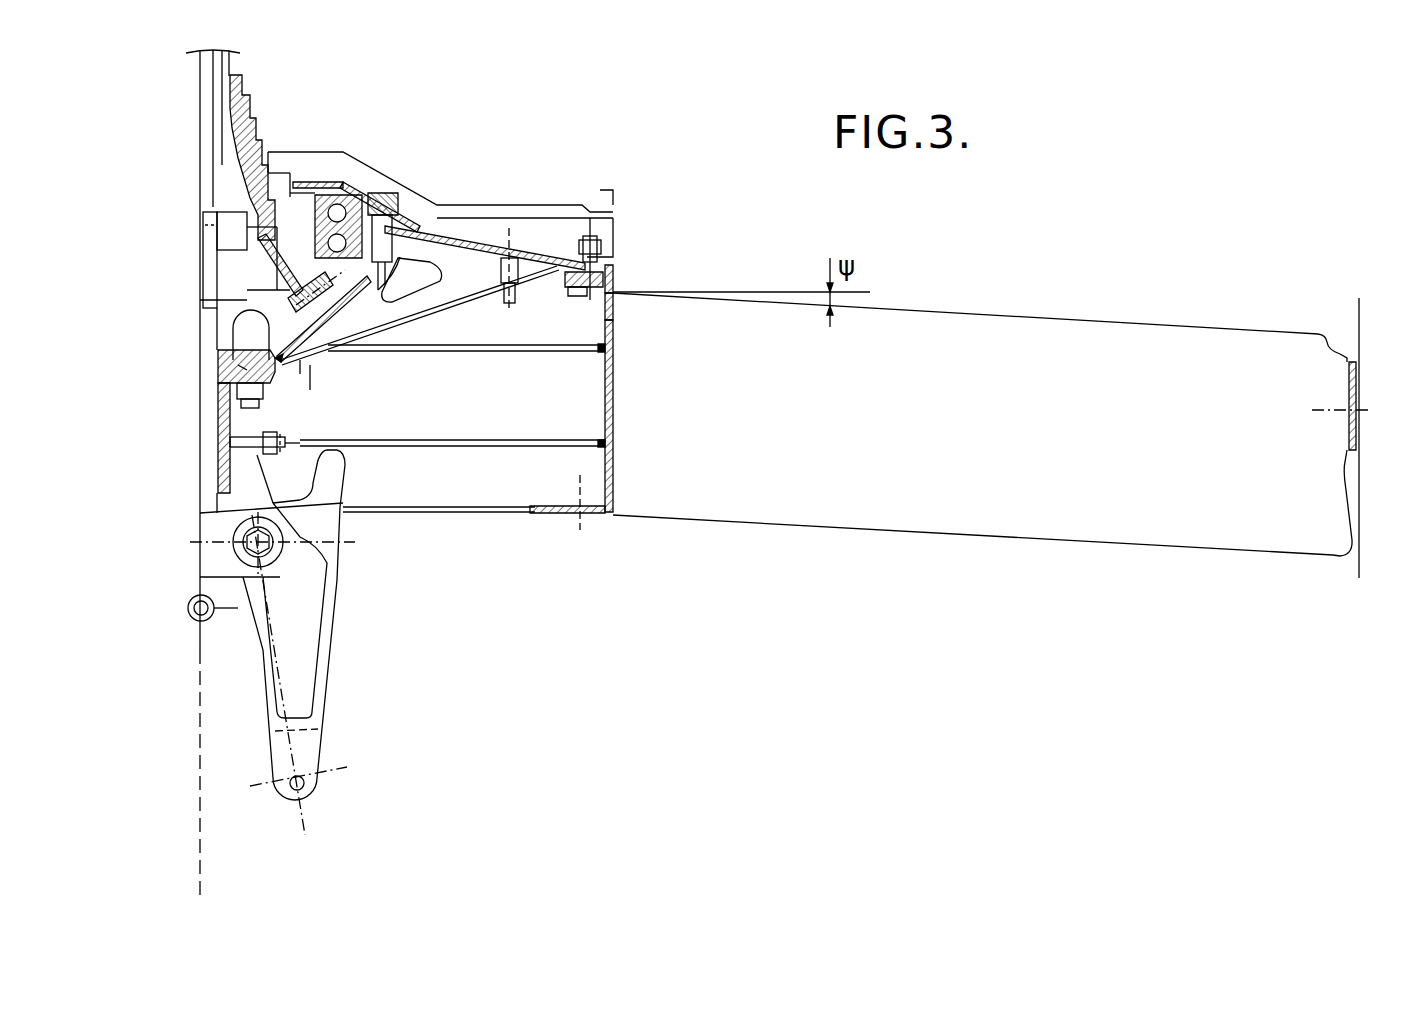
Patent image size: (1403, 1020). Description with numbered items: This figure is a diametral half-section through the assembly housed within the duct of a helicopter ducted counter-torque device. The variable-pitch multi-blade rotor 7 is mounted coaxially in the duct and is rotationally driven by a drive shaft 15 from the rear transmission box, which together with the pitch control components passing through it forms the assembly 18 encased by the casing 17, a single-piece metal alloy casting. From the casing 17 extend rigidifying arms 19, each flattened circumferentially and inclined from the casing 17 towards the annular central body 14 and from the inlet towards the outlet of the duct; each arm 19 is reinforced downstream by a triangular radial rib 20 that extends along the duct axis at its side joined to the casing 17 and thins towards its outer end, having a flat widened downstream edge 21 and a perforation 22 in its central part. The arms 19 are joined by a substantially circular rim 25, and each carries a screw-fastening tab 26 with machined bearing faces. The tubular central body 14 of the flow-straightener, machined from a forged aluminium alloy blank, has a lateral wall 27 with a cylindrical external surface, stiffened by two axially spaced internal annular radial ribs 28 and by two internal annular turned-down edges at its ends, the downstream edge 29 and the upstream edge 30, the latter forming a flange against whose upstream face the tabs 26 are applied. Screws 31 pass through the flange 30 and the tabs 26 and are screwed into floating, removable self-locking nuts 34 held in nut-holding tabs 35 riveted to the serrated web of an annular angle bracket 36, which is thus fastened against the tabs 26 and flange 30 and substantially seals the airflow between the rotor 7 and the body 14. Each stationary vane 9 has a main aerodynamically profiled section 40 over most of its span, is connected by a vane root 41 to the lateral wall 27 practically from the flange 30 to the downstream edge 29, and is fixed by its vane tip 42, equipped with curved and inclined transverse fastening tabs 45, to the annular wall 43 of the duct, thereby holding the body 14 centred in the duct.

The variable-pitch multi-blade rotor 7 is at (616, 196).
The stationary vane 9 is at (992, 435).
The annular central body 14 is at (510, 511).
The drive shaft 15 is at (258, 105).
The casing 17 is at (297, 362).
The rear transmission box assembly 18 is at (198, 307).
The rigidifying arm 19 is at (457, 237).
The radial rib 20 is at (464, 278).
The downstream edge 21 is at (410, 318).
The perforation 22 is at (405, 273).
The rim 25 is at (556, 274).
The tab 26 is at (610, 281).
The lateral wall 27 is at (613, 404).
The internal annular radial rib 28 is at (600, 440).
The downstream turned-down edge 29 is at (565, 515).
The upstream turned-down edge 30 is at (613, 293).
The screw 31 is at (618, 300).
The self-locking nut 34 is at (601, 246).
The nut-holding tab 35 is at (571, 250).
The annular angle bracket 36 is at (617, 238).
The main vane section with aerodynamic profile 40 is at (930, 340).
The vane root 41 is at (628, 478).
The vane tip 42 is at (1270, 533).
The annular wall 43 is at (1357, 313).
The transverse fastening tab 45 is at (1348, 418).